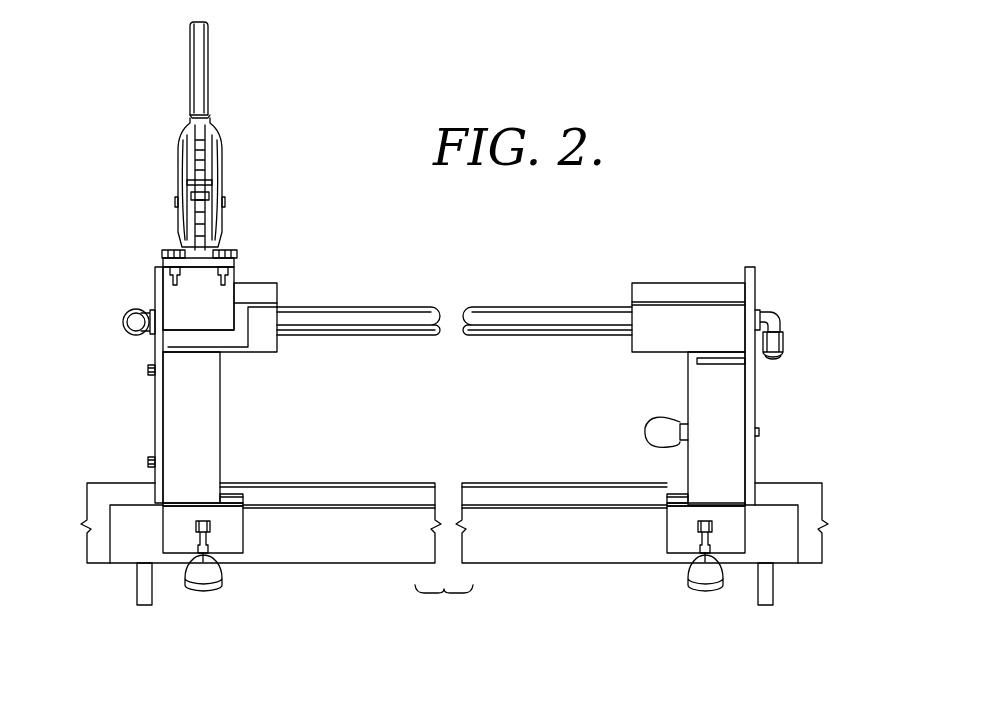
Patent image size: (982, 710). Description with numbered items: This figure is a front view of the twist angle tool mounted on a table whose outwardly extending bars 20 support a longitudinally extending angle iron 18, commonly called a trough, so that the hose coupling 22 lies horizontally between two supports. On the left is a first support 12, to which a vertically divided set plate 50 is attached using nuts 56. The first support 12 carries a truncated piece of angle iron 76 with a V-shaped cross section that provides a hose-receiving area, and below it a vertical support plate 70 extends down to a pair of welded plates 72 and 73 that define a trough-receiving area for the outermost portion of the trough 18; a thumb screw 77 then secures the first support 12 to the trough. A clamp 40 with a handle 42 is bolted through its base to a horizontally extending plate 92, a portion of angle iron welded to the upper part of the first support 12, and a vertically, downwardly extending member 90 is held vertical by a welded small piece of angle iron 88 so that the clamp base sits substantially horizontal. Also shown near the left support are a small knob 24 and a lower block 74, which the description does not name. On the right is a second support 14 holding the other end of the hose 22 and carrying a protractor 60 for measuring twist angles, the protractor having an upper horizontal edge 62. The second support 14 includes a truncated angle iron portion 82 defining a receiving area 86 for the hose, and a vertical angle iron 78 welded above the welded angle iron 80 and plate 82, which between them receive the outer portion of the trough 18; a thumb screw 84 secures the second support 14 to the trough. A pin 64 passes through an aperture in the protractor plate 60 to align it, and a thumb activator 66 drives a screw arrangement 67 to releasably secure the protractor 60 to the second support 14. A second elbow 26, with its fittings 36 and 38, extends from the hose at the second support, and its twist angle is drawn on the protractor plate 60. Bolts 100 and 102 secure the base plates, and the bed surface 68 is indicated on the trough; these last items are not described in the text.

The first support 12 is at (203, 325).
The second support 14 is at (724, 436).
The angle iron 18 is at (528, 556).
The outwardly extending bars 20 is at (136, 598).
The hose coupling 22 is at (365, 305).
The handle knob 24 is at (123, 320).
The second elbow 26 is at (792, 322).
The nut 36 is at (783, 350).
The elbow 38 is at (768, 310).
The clamp 40 is at (230, 165).
The handle 42 is at (208, 38).
The vertically divided plate 50 is at (153, 412).
The nuts 56 is at (146, 370).
The protractor 60 is at (752, 405).
The upper horizontal edge 62 is at (752, 268).
The pin 64 is at (697, 361).
The thumb activator 66 is at (645, 425).
The screw arrangement 67 is at (758, 432).
The bed top surface 68 is at (486, 496).
The vertical support plate 70 is at (191, 427).
The welded plate 72 is at (203, 528).
The welded plate 73 is at (235, 492).
The lower block 74 is at (270, 340).
The truncated piece of angle iron 76 is at (268, 283).
The thumb screw 77 is at (203, 580).
The vertical angle iron 78 is at (716, 428).
The welded angle iron 80 is at (706, 528).
The truncated angle iron portion 82 is at (672, 492).
The thumb screw 84 is at (705, 580).
The receiving area 86 is at (640, 286).
The small piece of angle iron 88 is at (170, 338).
The vertically downwardly extending member 90 is at (170, 300).
The horizontally extending plate 92 is at (162, 265).
The bolt 100 is at (698, 527).
The bolt 102 is at (196, 527).